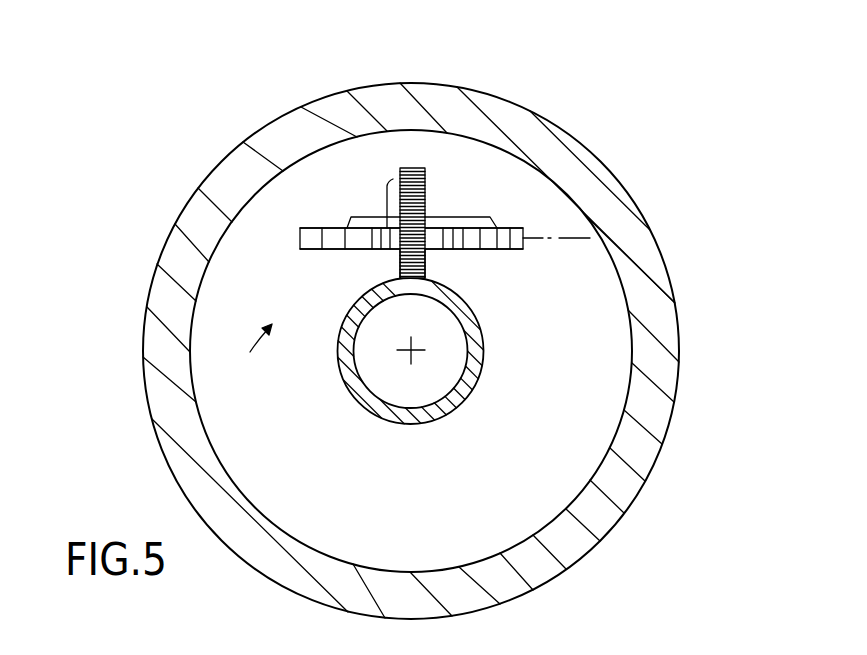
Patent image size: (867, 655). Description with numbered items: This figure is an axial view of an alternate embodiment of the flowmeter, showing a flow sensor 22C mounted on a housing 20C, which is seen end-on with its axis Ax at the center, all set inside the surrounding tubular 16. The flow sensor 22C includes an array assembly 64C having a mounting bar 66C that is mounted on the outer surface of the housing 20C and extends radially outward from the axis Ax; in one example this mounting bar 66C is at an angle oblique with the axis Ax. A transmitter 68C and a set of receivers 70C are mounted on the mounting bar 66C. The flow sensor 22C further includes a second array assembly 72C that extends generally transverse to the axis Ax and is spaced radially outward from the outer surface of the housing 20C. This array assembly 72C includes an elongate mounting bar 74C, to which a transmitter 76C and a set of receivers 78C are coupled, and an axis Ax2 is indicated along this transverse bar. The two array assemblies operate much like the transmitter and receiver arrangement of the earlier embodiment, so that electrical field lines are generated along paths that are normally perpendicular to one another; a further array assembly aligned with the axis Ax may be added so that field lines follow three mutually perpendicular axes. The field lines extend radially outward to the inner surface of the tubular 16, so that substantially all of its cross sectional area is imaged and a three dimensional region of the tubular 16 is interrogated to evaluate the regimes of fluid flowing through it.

The tubular 16 is at (674, 303).
The housing 20C is at (477, 386).
The flow sensor 22C is at (238, 353).
The array assembly 64C is at (391, 168).
The mounting bar 66C is at (425, 272).
The transmitter 68C is at (392, 258).
The set of receivers 70C is at (387, 207).
The array assembly 72C is at (295, 247).
The elongate mounting bar 74C is at (297, 238).
The transmitter 76C is at (323, 228).
The set of receivers 78C is at (447, 215).
The axis Ax is at (407, 355).
The second axis Ax2 is at (573, 236).